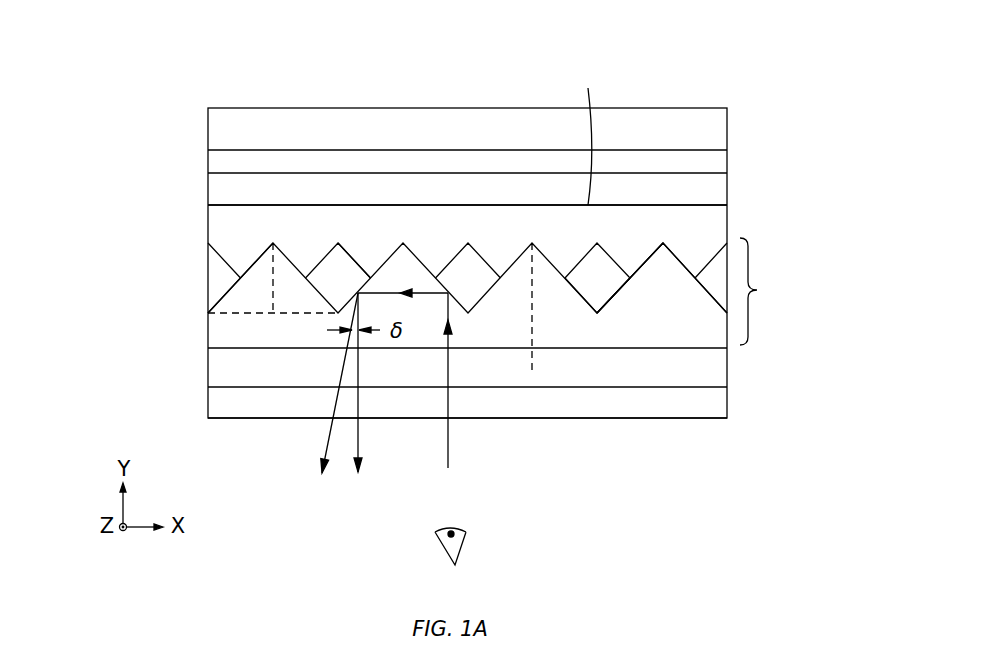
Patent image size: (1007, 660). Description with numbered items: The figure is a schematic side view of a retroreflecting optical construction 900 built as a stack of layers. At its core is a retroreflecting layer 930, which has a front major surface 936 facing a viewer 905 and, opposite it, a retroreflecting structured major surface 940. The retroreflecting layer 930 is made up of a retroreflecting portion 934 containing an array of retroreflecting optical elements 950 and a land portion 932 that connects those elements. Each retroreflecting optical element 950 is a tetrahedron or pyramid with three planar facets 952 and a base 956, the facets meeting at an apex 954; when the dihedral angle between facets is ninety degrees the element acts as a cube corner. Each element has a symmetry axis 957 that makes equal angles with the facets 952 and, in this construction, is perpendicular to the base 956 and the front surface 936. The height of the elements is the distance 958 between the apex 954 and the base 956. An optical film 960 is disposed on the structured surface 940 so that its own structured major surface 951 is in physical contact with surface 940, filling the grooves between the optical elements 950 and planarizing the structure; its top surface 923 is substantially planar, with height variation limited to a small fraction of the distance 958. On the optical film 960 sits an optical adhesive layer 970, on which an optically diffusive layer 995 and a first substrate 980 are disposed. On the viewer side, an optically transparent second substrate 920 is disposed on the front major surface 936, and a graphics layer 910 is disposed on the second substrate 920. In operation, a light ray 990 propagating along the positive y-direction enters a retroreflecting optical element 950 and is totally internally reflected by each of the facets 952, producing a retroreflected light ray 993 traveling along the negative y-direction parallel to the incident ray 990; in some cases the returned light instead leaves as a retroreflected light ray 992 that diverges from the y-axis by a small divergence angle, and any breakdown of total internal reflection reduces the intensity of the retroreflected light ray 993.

The retroreflecting optical construction 900 is at (228, 58).
The viewer 905 is at (438, 543).
The graphics layer 910 is at (212, 405).
The second substrate 920 is at (212, 367).
The top surface 923 is at (588, 135).
The retroreflecting layer 930 is at (772, 291).
The land portion 932 is at (212, 332).
The retroreflecting portion 934 is at (212, 292).
The front major surface 936 is at (248, 348).
The retroreflecting structured major surface 940 is at (221, 262).
The retroreflecting optical element 950 is at (654, 280).
The structured major surface 951 is at (353, 258).
The facets 952 is at (577, 295).
The apex 954 is at (663, 243).
The base 956 is at (253, 313).
The symmetry axis 957 is at (532, 326).
The distance 958 is at (276, 274).
The optical film 960 is at (212, 222).
The optical adhesive layer 970 is at (718, 190).
The first substrate 980 is at (718, 123).
The light ray 990 is at (448, 447).
The retroreflected light ray 992 is at (326, 452).
The retroreflected light ray 993 is at (360, 450).
The optically diffusive layer 995 is at (718, 157).